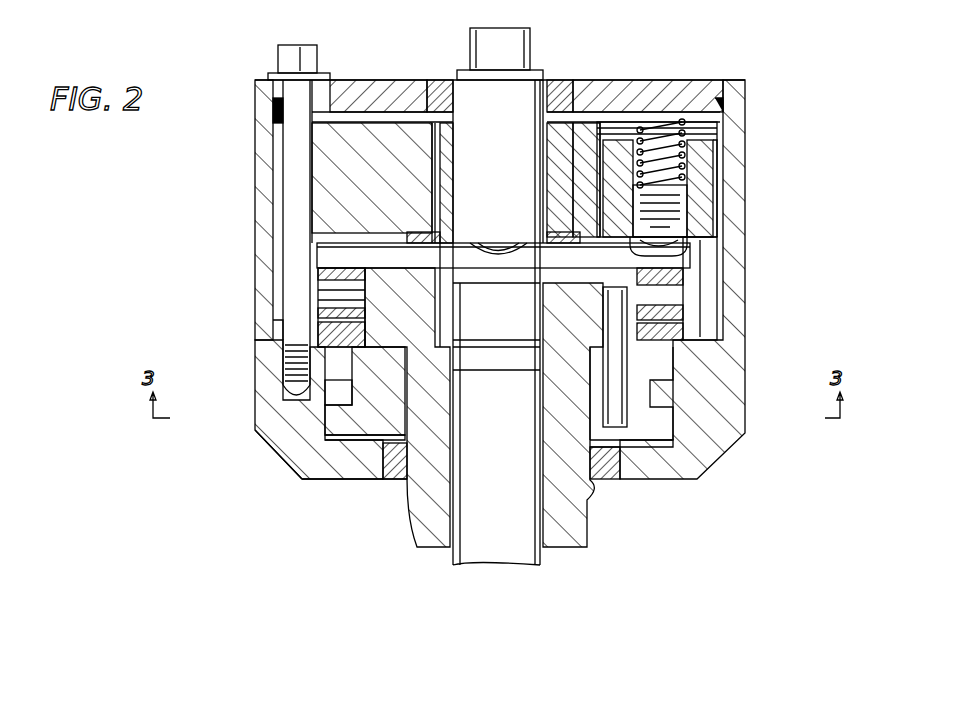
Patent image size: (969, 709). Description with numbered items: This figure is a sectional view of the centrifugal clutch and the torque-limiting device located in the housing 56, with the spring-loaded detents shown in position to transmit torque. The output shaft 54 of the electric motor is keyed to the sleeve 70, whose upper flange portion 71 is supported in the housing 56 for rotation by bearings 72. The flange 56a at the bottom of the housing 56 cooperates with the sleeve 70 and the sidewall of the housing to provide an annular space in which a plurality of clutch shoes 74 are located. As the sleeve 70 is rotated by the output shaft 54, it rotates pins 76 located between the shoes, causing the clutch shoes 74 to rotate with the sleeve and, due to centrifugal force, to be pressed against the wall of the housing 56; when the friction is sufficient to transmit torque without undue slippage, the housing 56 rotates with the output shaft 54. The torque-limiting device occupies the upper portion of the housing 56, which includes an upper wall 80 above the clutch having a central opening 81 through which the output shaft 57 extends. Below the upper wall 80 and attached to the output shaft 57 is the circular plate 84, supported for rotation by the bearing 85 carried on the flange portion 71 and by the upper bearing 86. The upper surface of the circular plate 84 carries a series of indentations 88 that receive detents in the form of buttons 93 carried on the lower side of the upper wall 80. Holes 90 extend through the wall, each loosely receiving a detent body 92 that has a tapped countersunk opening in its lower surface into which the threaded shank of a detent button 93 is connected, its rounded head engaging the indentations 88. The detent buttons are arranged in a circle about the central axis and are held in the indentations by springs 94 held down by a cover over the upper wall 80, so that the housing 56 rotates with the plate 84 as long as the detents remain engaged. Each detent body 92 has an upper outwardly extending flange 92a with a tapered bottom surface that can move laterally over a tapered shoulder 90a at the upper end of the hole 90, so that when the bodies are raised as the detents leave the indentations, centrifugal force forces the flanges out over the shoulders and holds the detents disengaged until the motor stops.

The output shaft 54 is at (527, 553).
The housing 56 is at (740, 237).
The flange 56a is at (325, 483).
The output shaft 57 is at (527, 45).
The sleeve 70 is at (425, 525).
The upper flange portion 71 is at (372, 300).
The bearings 72 is at (720, 299).
The clutch shoes 74 is at (325, 425).
The pins 76 is at (615, 432).
The upper wall 80 is at (378, 130).
The central opening 81 is at (567, 140).
The circular plate 84 is at (330, 258).
The bearing 85 is at (690, 279).
The upper bearing 86 is at (405, 237).
The indentations 88 is at (500, 250).
The holes 90 is at (715, 185).
The tapered shoulder 90a is at (722, 130).
The detent body 92 is at (707, 205).
The flange 92a is at (725, 150).
The detent button 93 is at (690, 257).
The springs 94 is at (680, 118).